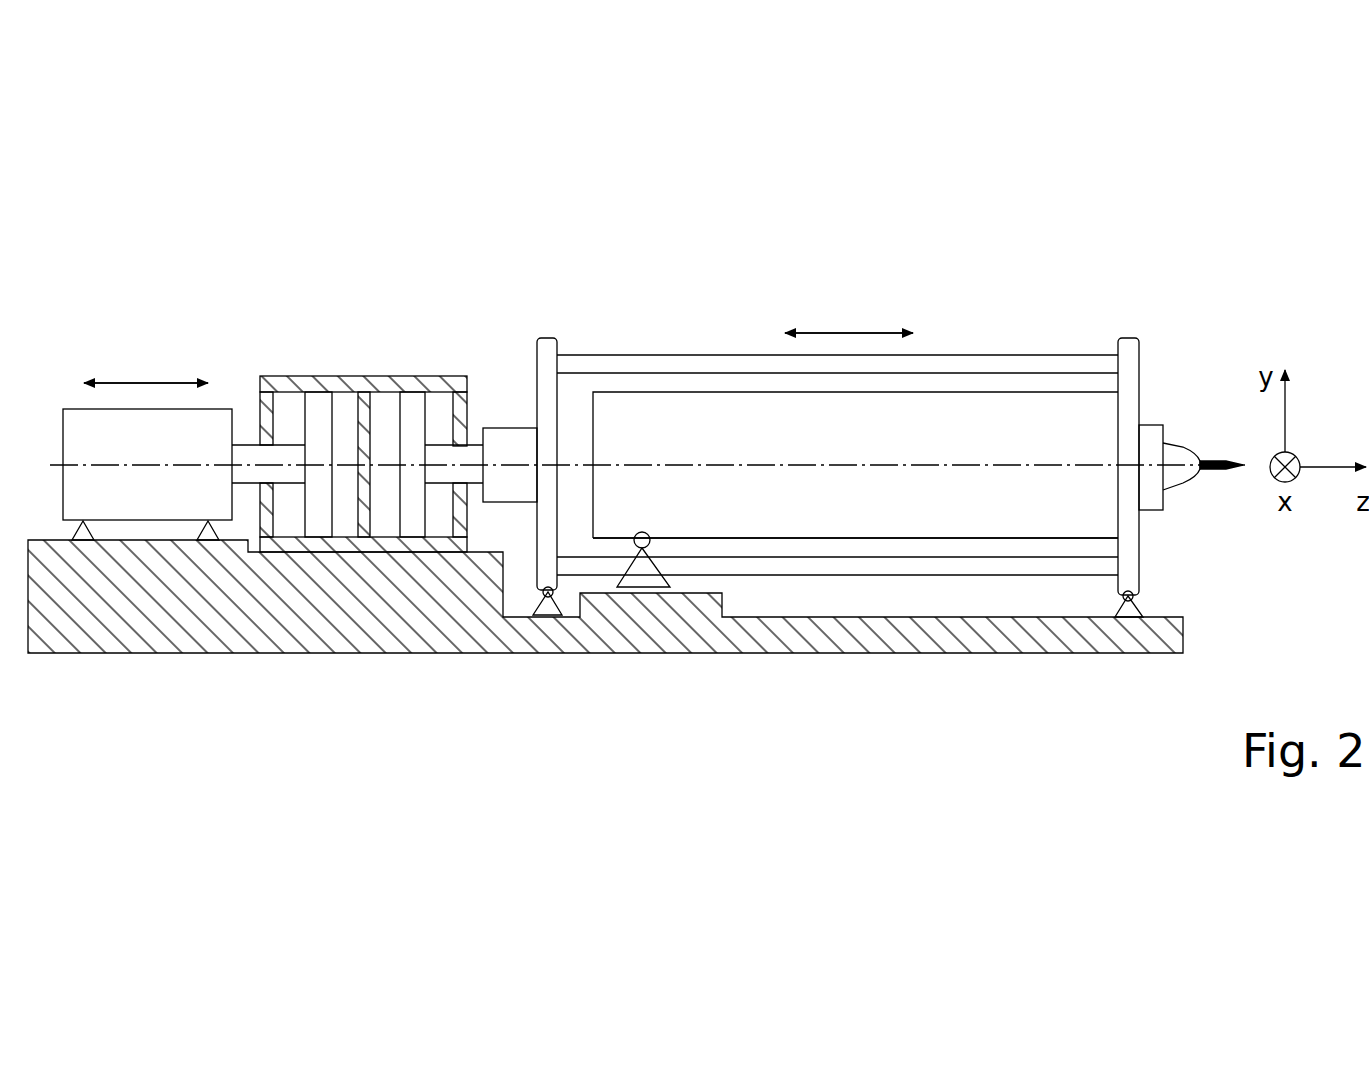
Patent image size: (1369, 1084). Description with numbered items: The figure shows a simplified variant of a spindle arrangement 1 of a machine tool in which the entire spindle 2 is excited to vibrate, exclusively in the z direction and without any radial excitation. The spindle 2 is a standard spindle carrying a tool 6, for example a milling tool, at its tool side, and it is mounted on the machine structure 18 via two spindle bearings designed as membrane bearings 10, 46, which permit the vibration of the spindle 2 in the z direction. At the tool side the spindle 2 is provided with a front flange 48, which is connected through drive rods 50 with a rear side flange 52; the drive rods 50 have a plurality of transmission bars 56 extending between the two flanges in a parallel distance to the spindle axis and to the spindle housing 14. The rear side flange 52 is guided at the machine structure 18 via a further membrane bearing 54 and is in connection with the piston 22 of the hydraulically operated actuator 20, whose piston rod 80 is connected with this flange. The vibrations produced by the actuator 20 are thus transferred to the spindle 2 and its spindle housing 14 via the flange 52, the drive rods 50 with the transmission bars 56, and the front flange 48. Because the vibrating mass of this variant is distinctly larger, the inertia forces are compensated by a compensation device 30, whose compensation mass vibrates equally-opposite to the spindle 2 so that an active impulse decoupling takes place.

The spindle arrangement 1 is at (843, 297).
The spindle 2 is at (993, 418).
The tool 6 is at (1222, 463).
The membrane bearing 10 is at (645, 590).
The spindle housing 14 is at (930, 540).
The machine structure 18 is at (210, 600).
The actuator 20 is at (362, 362).
The piston 22 is at (413, 413).
The compensation device 30 is at (149, 365).
The membrane bearing 46 is at (1128, 612).
The front flange 48 is at (1128, 350).
The drive rods 50 is at (713, 350).
The rear side flange 52 is at (547, 350).
The membrane bearing 54 is at (548, 612).
The transmission bars 56 is at (838, 567).
The piston rod 80 is at (467, 458).